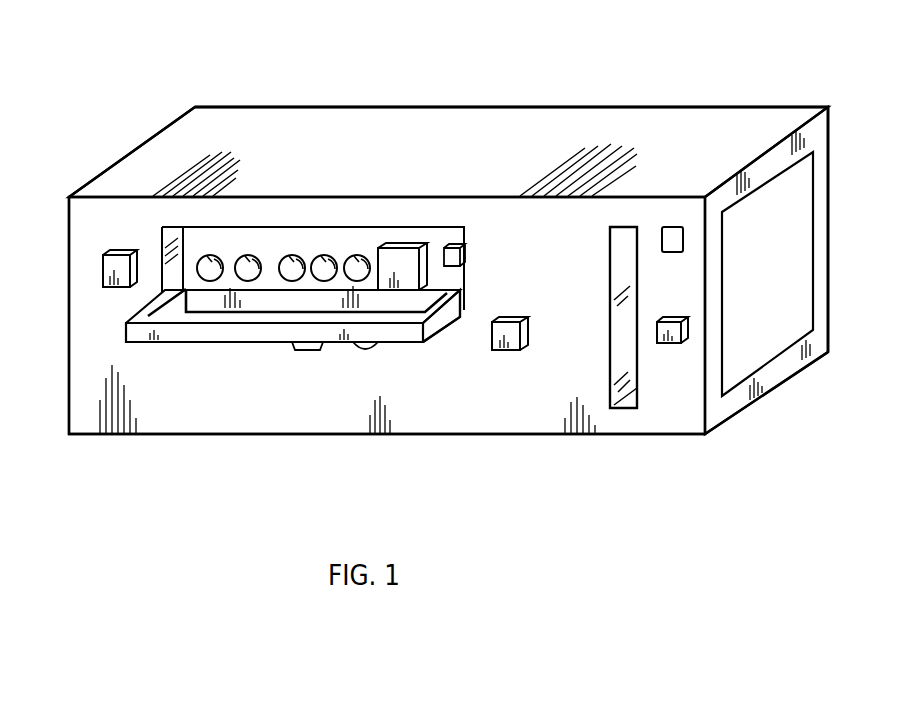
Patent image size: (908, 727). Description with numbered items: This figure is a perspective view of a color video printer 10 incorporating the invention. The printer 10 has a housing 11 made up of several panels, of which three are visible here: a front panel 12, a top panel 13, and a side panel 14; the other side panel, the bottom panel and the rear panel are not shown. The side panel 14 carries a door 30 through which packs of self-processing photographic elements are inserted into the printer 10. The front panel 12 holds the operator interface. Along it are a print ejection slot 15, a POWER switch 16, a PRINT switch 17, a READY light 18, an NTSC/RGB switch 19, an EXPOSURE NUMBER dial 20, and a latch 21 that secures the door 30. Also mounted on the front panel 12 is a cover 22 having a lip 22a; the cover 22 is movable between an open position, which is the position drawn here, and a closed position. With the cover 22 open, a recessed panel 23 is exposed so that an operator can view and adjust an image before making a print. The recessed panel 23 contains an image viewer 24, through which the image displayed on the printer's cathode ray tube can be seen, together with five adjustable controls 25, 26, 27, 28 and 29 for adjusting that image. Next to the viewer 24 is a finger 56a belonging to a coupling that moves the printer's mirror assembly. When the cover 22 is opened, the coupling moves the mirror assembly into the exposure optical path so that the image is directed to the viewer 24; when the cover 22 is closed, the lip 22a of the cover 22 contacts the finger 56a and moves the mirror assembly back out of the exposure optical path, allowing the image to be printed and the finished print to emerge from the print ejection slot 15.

The printer 10 is at (523, 98).
The housing 11 is at (800, 106).
The front panel 12 is at (683, 430).
The top panel 13 is at (169, 143).
The side panel 14 is at (824, 133).
The print ejection slot 15 is at (610, 320).
The POWER switch 16 is at (118, 262).
The PRINT switch 17 is at (303, 352).
The READY light 18 is at (366, 352).
The NTSC/RGB switch 19 is at (518, 322).
The EXPOSURE NUMBER dial 20 is at (671, 226).
The latch 21 is at (679, 317).
The cover 22 is at (221, 346).
The lip 22a is at (440, 338).
The recessed panel 23 is at (286, 227).
The image viewer 24 is at (403, 252).
The adjustable control 25 is at (212, 257).
The adjustable control 26 is at (249, 257).
The adjustable control 27 is at (294, 257).
The adjustable control 28 is at (326, 257).
The adjustable control 29 is at (359, 257).
The door 30 is at (800, 262).
The finger 56a is at (462, 256).